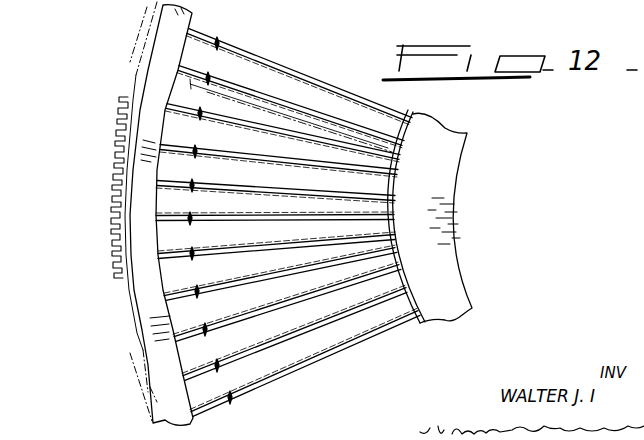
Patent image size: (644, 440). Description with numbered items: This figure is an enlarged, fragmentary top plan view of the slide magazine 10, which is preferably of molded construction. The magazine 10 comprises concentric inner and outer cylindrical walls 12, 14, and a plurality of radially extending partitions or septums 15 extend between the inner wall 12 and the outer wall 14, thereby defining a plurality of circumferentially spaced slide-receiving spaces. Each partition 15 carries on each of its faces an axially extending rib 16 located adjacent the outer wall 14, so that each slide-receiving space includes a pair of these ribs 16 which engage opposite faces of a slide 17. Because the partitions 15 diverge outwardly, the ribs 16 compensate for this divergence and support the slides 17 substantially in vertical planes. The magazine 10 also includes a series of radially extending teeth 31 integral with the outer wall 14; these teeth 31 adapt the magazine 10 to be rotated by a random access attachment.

The slide magazine 10 is at (268, 213).
The inner cylindrical wall 12 is at (442, 268).
The outer cylindrical wall 14 is at (154, 339).
The partition 15 is at (294, 55).
The rib 16 is at (219, 42).
The slide 17 is at (293, 115).
The teeth 31 is at (110, 258).